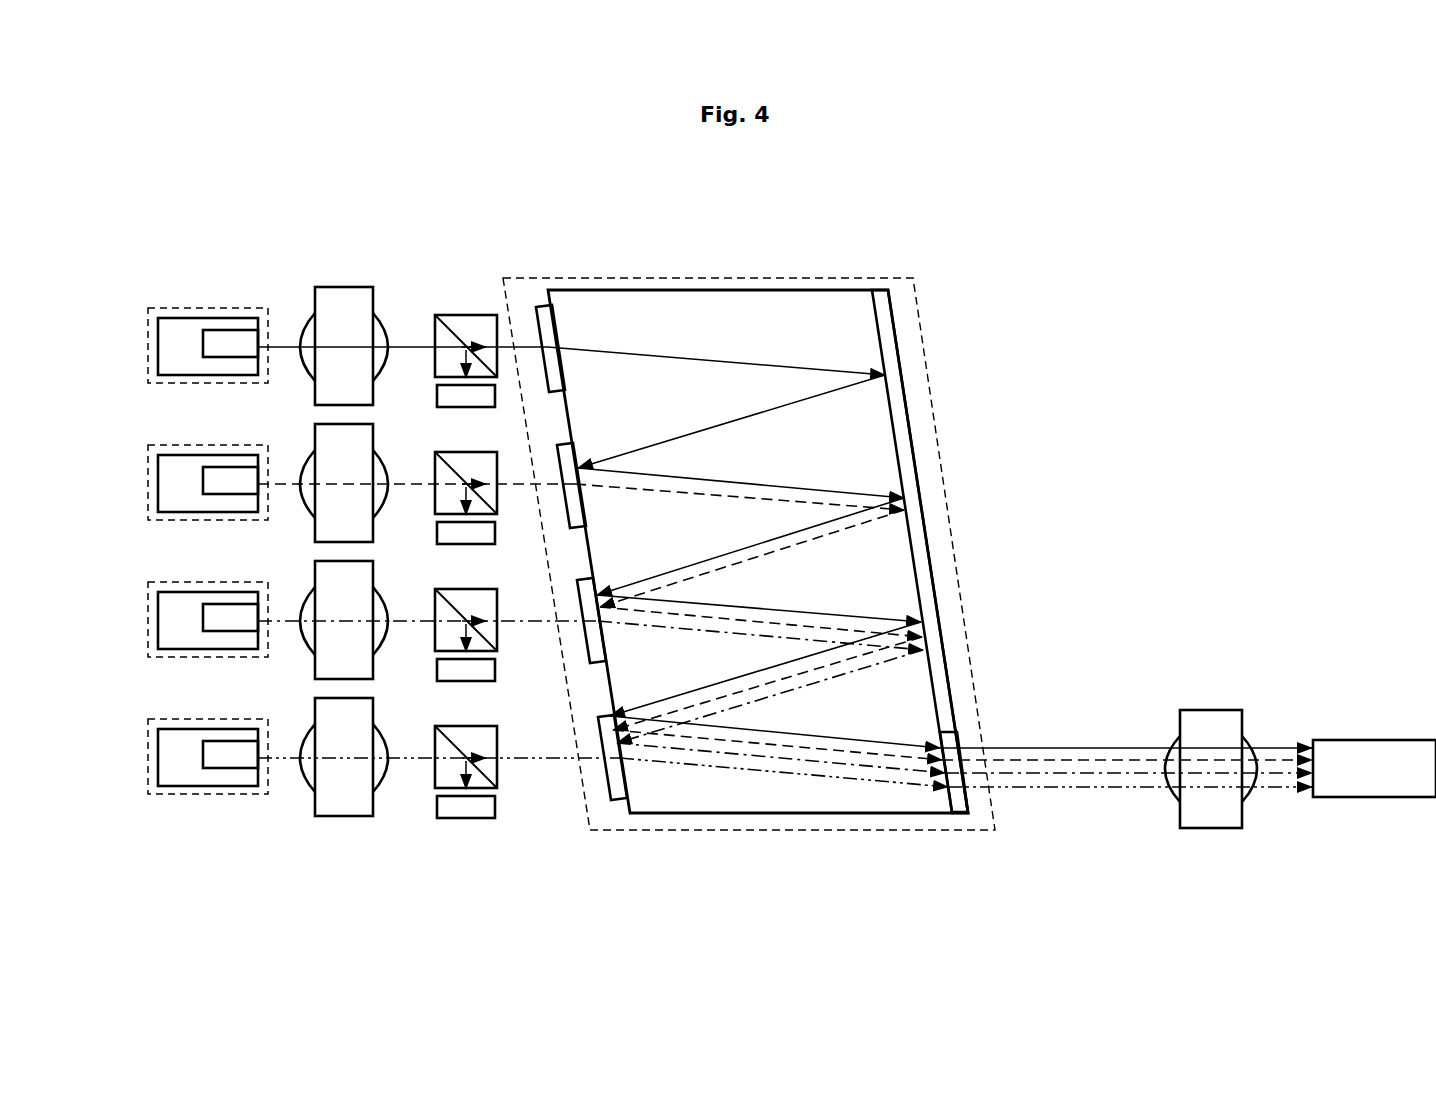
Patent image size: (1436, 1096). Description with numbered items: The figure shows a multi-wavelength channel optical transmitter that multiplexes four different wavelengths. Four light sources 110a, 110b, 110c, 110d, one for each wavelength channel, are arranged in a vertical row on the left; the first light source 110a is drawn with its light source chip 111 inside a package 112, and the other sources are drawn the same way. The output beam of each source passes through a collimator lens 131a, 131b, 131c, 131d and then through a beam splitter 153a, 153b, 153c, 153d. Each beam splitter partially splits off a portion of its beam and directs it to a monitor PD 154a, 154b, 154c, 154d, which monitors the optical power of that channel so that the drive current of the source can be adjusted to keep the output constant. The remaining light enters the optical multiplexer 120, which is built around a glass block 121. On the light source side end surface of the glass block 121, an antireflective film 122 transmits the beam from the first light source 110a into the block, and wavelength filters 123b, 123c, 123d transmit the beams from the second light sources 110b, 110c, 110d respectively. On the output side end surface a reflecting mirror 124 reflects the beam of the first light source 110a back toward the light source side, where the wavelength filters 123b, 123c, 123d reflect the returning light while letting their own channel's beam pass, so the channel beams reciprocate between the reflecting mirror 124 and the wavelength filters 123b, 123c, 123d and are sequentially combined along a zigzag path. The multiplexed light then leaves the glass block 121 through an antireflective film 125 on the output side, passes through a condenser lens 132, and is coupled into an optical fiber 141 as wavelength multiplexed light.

The first light source 110a is at (166, 344).
The second light source 110b is at (148, 484).
The second light source 110c is at (148, 621).
The second light source 110d is at (148, 758).
The light source chip 111 is at (214, 360).
The light source package 112 is at (184, 318).
The collimator lens 131a is at (316, 300).
The collimator lens 131b is at (316, 439).
The collimator lens 131c is at (316, 575).
The collimator lens 131d is at (316, 710).
The beam splitter 153a is at (432, 335).
The beam splitter 153b is at (432, 472).
The beam splitter 153c is at (432, 609).
The beam splitter 153d is at (432, 746).
The monitor PD 154a is at (455, 408).
The monitor PD 154b is at (455, 545).
The monitor PD 154c is at (455, 682).
The monitor PD 154d is at (455, 819).
The optical multiplexer 120 is at (815, 277).
The glass block 121 is at (706, 290).
The antireflective film 122 is at (538, 302).
The wavelength filter 123b is at (566, 502).
The wavelength filter 123c is at (583, 638).
The wavelength filter 123d is at (604, 782).
The reflecting mirror 124 is at (945, 572).
The antireflective film 125 is at (960, 740).
The condenser lens 132 is at (1208, 710).
The optical fiber 141 is at (1372, 740).